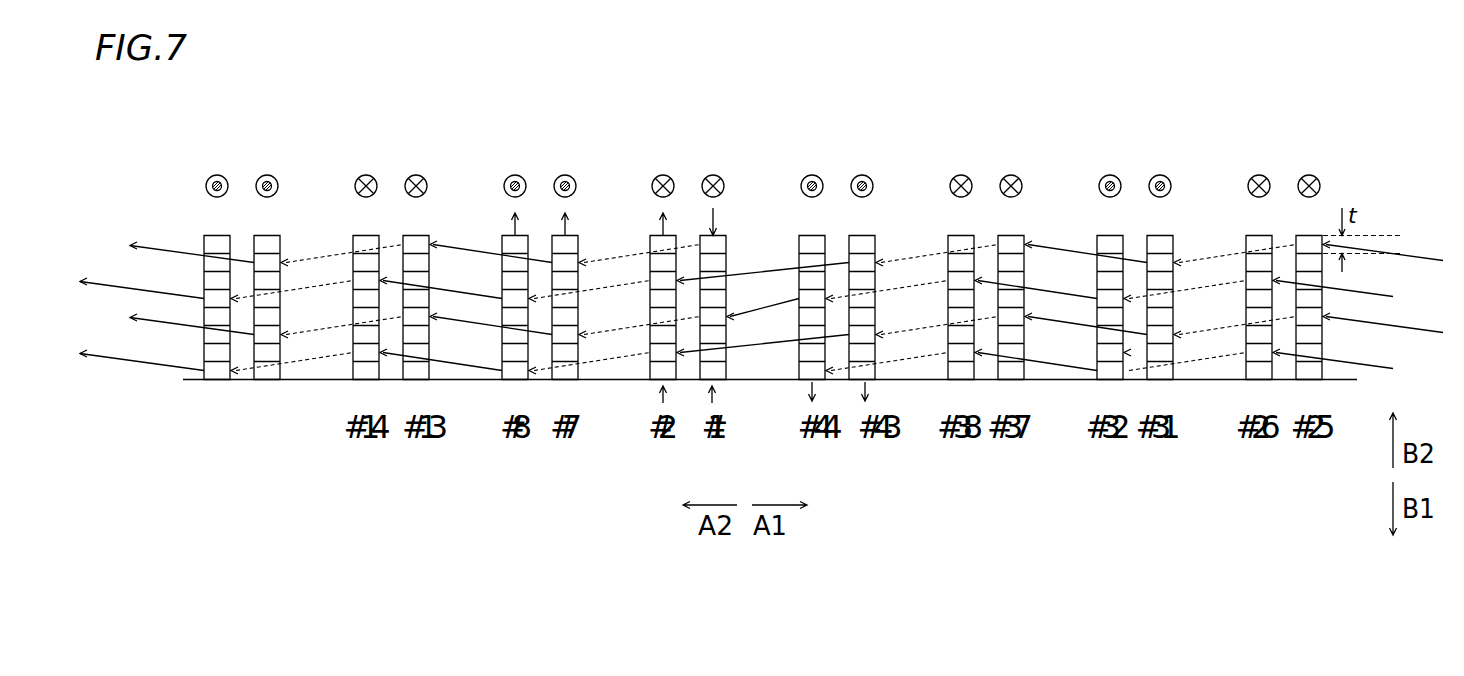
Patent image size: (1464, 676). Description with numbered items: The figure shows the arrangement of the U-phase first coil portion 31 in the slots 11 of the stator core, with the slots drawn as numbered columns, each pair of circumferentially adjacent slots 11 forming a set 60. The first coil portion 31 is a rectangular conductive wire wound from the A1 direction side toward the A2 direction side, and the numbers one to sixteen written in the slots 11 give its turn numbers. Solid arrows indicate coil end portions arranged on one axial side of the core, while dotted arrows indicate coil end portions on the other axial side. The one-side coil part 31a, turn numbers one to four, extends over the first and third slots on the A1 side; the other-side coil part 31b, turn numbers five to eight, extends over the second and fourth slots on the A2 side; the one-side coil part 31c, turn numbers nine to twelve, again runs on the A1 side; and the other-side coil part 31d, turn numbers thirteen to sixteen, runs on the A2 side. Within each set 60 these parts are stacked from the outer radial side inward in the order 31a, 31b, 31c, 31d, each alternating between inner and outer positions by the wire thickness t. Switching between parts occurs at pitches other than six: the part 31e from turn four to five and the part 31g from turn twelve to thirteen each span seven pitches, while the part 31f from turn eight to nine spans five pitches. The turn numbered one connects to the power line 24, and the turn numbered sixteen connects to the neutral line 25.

The slot 11 is at (208, 236).
The first coil portion 31 is at (294, 154).
The one-side coil part 31a is at (167, 250).
The other-side coil part 31b is at (135, 289).
The one-side coil part 31c is at (170, 323).
The other-side coil part 31d is at (125, 360).
The switching part 31e is at (763, 272).
The switching part 31f is at (788, 301).
The switching part 31g is at (740, 346).
The power line 24 is at (660, 220).
The neutral line 25 is at (893, 396).
The set of two slots 60 is at (302, 444).